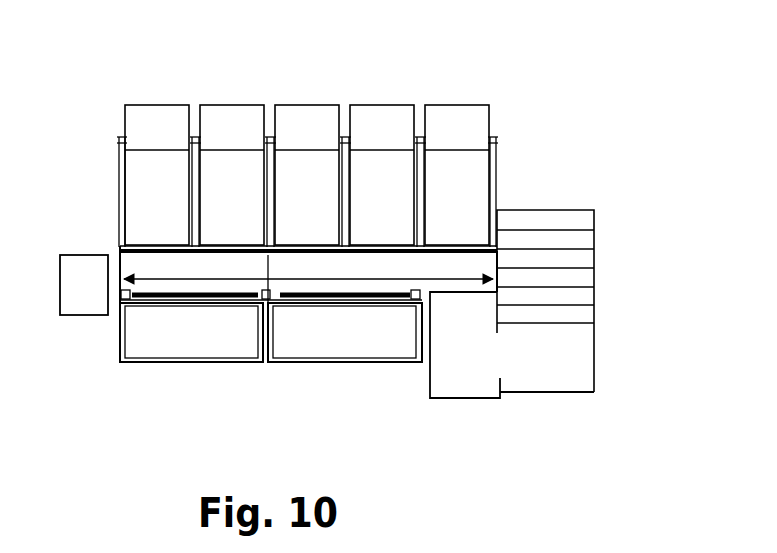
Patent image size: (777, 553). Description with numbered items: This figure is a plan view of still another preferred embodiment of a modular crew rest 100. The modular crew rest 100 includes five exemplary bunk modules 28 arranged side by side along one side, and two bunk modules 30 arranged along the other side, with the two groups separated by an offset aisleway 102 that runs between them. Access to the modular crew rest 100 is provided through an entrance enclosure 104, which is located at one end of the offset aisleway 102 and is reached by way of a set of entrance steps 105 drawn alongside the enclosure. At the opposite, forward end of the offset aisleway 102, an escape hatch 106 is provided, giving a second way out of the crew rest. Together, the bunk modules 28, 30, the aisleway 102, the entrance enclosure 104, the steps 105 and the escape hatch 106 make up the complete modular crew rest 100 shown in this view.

The modular crew rest 100 is at (437, 87).
The bunk modules 28 is at (162, 122).
The offset aisleway 102 is at (162, 268).
The bunk modules 30 is at (220, 347).
The entrance enclosure 104 is at (487, 303).
The entrance steps 105 is at (582, 257).
The escape hatch 106 is at (73, 298).